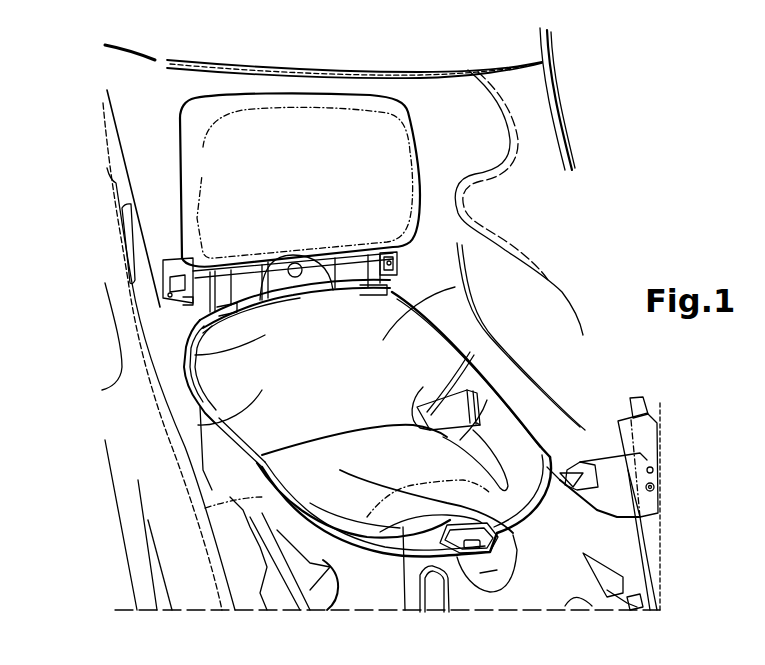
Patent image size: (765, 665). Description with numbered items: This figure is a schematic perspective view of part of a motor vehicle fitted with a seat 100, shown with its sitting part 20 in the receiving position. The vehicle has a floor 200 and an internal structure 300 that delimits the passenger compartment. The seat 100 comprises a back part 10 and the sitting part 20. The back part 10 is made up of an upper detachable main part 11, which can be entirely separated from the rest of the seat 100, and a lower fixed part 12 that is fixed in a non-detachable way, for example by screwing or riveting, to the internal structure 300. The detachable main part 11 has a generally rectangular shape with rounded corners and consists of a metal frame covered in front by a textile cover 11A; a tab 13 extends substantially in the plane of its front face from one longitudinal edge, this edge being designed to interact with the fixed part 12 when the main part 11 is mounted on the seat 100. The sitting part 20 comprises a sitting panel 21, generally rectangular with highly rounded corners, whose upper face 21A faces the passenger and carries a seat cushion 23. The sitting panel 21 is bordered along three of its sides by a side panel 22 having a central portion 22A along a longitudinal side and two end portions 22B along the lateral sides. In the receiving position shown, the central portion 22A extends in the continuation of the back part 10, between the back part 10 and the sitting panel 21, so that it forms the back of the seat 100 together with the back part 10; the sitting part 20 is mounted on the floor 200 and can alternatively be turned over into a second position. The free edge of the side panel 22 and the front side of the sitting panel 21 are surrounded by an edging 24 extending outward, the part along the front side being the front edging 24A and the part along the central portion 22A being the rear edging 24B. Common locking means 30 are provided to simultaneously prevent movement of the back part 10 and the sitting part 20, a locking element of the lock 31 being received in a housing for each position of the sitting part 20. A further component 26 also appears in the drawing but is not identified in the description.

The back part 10 is at (193, 108).
The upper detachable main part 11 is at (400, 153).
The textile cover 11A is at (373, 122).
The lower fixed part 12 is at (393, 272).
The tab 13 is at (273, 274).
The sitting part 20 is at (323, 400).
The sitting panel 21 is at (408, 512).
The upper face 21A is at (513, 550).
The side panel 22 is at (460, 297).
The central portion 22A is at (195, 355).
The end portions 22B is at (438, 347).
The seat cushion 23 is at (235, 500).
The edging 24 is at (537, 500).
The front edging 24A is at (378, 545).
The rear edging 24B is at (338, 278).
The bracket 26 is at (473, 604).
The common locking means 30 is at (288, 257).
The lock 31 is at (293, 263).
The seat 100 is at (552, 221).
The floor 200 is at (370, 597).
The internal structure 300 is at (533, 123).